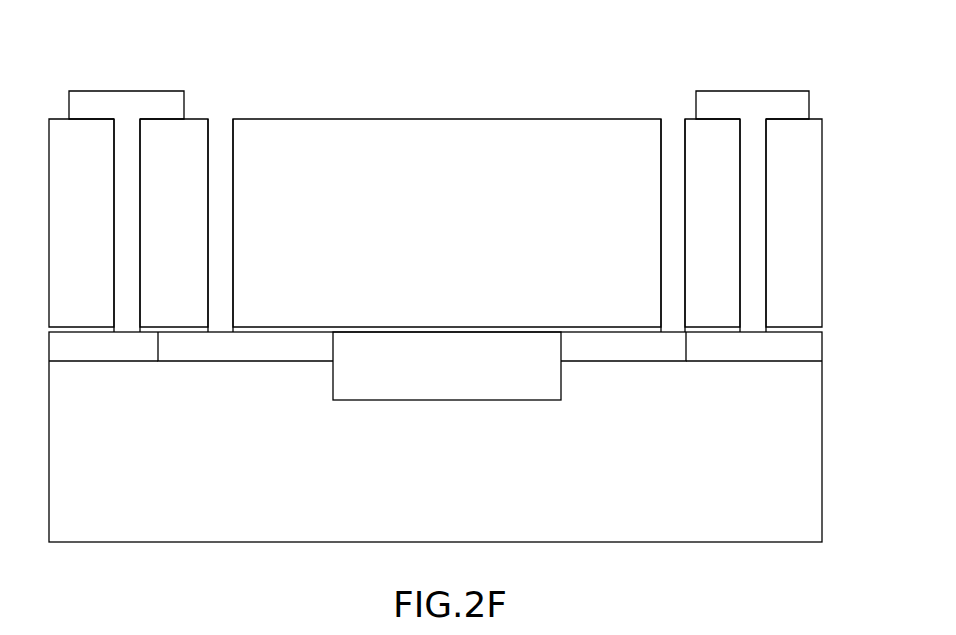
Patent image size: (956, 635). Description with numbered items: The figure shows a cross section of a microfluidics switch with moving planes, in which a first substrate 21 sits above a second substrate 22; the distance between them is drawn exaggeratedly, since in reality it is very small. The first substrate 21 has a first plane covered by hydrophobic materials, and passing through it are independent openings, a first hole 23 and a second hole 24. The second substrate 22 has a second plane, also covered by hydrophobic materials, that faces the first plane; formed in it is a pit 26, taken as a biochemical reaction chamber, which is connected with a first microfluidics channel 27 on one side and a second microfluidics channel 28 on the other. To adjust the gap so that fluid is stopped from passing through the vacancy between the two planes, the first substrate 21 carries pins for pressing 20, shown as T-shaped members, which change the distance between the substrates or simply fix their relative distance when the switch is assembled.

The pin for pressing 20 is at (123, 99).
The first substrate 21 is at (803, 294).
The second substrate 22 is at (705, 501).
The first hole 23 is at (221, 128).
The second hole 24 is at (672, 128).
The pit 26 is at (467, 371).
The first microfluidics channel 27 is at (210, 348).
The second microfluidics channel 28 is at (668, 347).